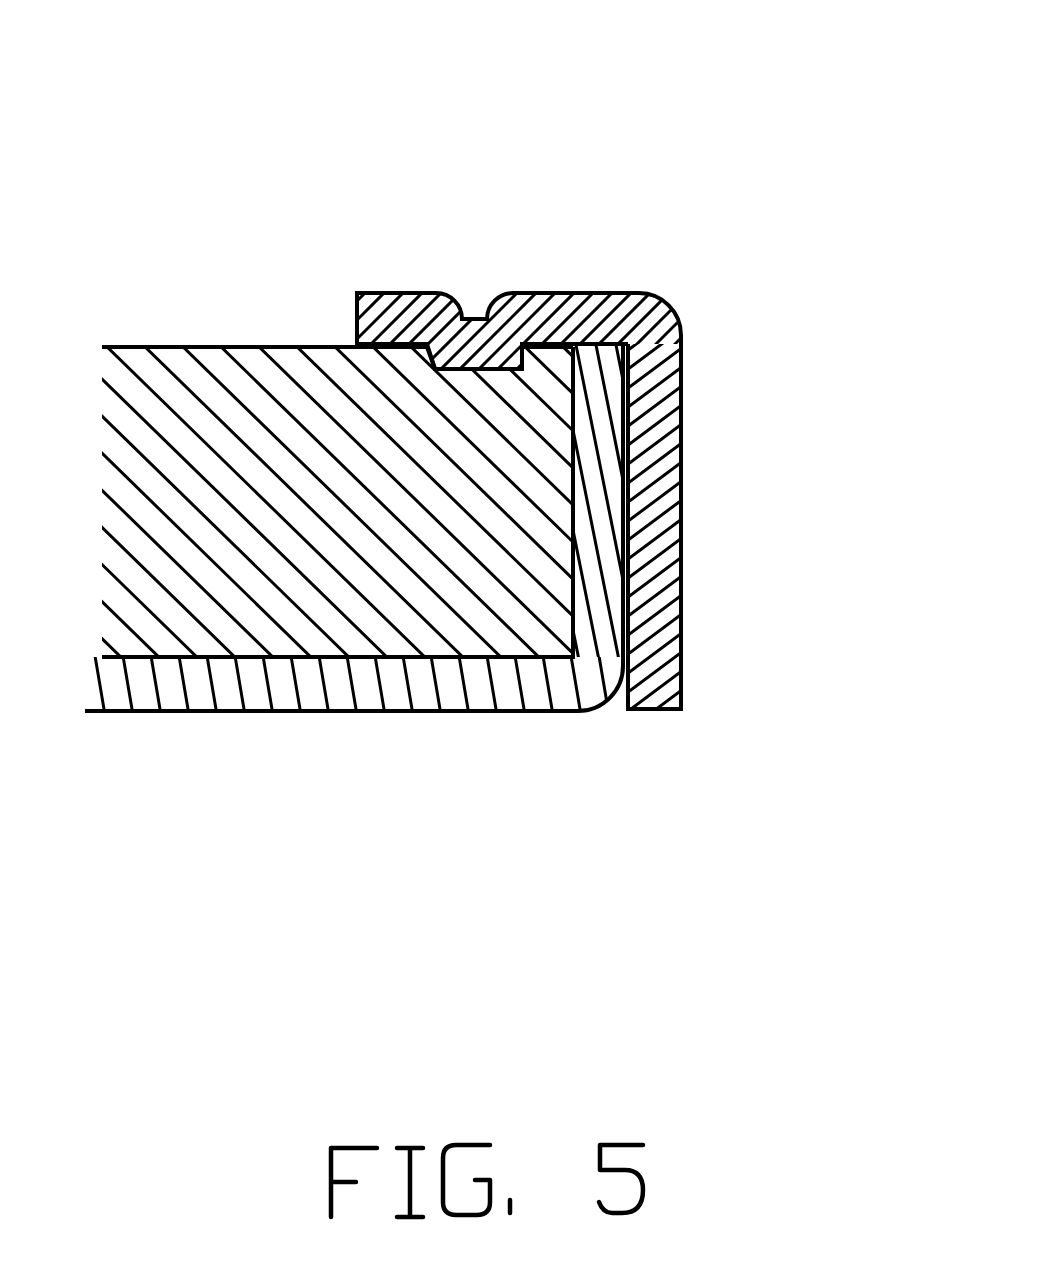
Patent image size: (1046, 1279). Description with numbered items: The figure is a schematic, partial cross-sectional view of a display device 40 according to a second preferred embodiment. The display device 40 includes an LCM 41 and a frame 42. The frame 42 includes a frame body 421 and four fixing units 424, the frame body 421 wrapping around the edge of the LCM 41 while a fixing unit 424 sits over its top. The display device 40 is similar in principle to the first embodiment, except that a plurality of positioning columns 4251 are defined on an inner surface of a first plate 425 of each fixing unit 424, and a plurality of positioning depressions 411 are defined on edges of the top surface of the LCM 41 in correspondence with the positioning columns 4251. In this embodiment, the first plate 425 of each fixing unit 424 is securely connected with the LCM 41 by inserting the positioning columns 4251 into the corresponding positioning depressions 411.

The display device 40 is at (523, 413).
The LCM 41 is at (198, 378).
The positioning depressions 411 is at (430, 344).
The frame 42 is at (523, 495).
The frame body 421 is at (206, 690).
The fixing units 424 is at (668, 306).
The first plate 425 is at (577, 315).
The positioning columns 4251 is at (487, 316).